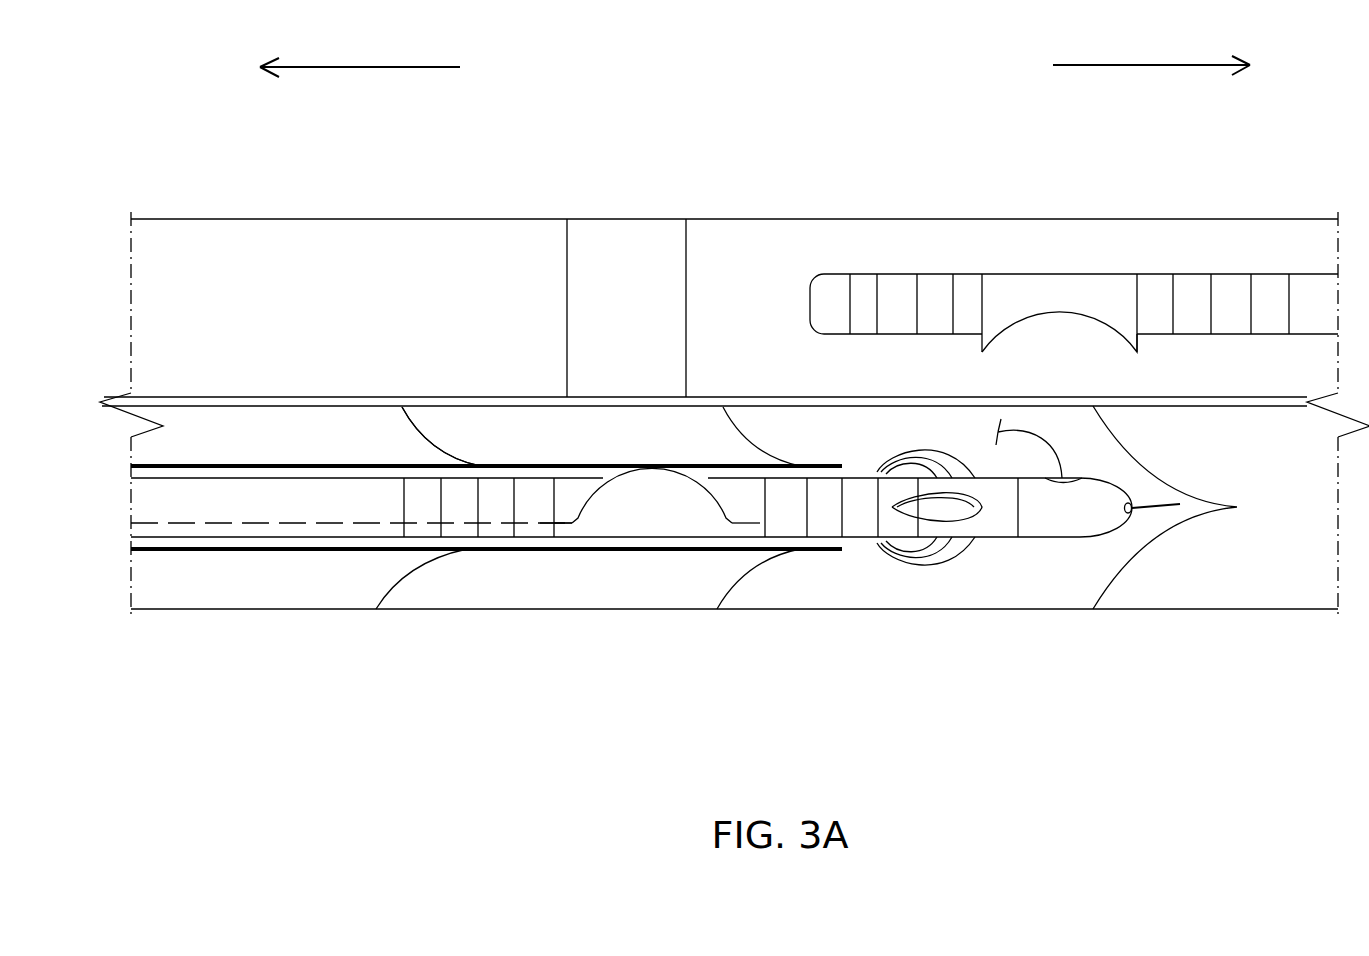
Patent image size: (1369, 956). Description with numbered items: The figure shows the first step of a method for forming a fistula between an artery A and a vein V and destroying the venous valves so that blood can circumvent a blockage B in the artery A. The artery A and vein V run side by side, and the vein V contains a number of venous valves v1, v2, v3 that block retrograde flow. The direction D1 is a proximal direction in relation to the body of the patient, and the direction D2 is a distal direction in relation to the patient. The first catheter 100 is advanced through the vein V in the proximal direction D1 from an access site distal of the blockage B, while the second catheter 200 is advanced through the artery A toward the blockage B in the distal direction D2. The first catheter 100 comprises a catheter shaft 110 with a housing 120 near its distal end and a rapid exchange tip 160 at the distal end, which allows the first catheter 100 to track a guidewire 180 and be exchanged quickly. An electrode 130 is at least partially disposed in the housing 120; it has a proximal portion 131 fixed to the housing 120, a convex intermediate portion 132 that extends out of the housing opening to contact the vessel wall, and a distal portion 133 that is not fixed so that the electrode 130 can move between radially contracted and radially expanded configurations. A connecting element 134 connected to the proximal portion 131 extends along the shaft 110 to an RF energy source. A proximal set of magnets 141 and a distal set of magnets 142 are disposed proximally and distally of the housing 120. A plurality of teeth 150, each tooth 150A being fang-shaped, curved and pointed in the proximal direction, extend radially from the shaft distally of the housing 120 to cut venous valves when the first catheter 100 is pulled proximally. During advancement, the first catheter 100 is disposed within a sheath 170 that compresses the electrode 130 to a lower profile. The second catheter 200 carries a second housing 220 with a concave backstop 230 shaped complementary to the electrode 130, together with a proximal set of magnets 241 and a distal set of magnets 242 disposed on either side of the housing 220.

The first catheter 100 is at (189, 445).
The catheter shaft 110 is at (274, 478).
The housing 120 is at (660, 540).
The electrode 130 is at (659, 420).
The proximal portion 131 is at (565, 523).
The intermediate portion 132 is at (620, 468).
The distal portion 133 is at (742, 507).
The connecting element 134 is at (185, 523).
The proximal set of magnets 141 is at (500, 530).
The distal set of magnets 142 is at (823, 523).
The plurality of teeth 150 is at (957, 592).
The teeth 150A is at (920, 452).
The rapid exchange tip 160 is at (1055, 523).
The sheath 170 is at (355, 552).
The guidewire 180 is at (1150, 508).
The second catheter 200 is at (1074, 251).
The second housing 220 is at (1037, 274).
The backstop 230 is at (1072, 312).
The proximal set of magnets 241 is at (1187, 274).
The distal set of magnets 242 is at (897, 274).
The artery A is at (383, 219).
The blockage B is at (626, 308).
The vein V is at (1240, 610).
The venous valve v1 is at (1117, 572).
The venous valve v2 is at (772, 570).
The venous valve v3 is at (428, 573).
The proximal direction D1 is at (1151, 47).
The distal direction D2 is at (360, 51).